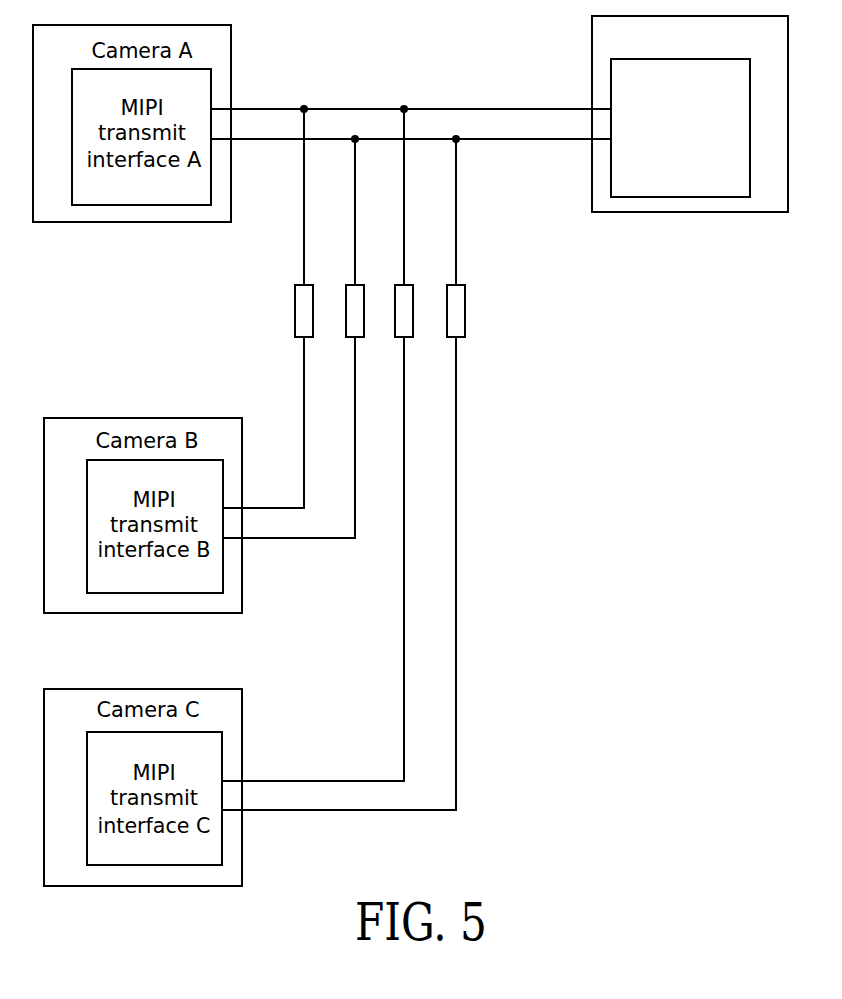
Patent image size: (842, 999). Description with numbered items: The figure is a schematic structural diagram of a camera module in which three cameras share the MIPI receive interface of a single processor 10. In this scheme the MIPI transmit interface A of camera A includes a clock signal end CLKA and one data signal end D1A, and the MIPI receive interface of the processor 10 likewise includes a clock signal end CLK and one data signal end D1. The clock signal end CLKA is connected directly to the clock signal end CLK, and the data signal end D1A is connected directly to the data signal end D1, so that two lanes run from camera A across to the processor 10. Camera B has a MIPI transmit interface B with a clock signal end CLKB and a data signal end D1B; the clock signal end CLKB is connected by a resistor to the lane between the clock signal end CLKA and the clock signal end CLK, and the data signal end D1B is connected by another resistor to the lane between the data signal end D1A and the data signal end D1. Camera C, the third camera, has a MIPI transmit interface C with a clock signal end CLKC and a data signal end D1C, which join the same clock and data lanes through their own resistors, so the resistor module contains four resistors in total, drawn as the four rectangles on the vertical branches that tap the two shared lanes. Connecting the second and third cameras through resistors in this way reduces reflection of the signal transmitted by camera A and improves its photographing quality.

The processor 10 is at (663, 212).
The clock signal end CLKA is at (411, 102).
The data signal end D1A is at (411, 132).
The clock signal end CLK is at (540, 101).
The data signal end D1 is at (540, 131).
The clock signal end CLKB is at (263, 422).
The data signal end D1B is at (289, 437).
The clock signal end CLKC is at (313, 559).
The data signal end D1C is at (339, 573).